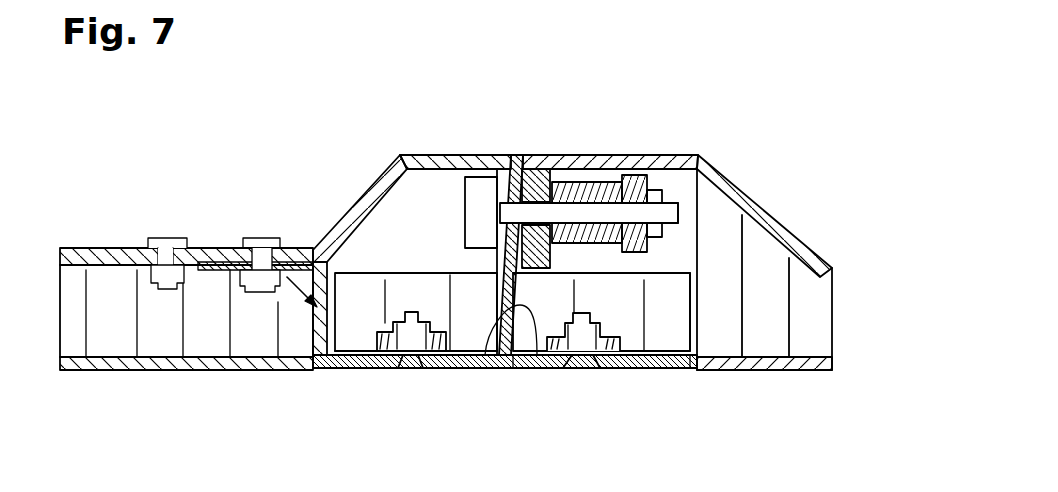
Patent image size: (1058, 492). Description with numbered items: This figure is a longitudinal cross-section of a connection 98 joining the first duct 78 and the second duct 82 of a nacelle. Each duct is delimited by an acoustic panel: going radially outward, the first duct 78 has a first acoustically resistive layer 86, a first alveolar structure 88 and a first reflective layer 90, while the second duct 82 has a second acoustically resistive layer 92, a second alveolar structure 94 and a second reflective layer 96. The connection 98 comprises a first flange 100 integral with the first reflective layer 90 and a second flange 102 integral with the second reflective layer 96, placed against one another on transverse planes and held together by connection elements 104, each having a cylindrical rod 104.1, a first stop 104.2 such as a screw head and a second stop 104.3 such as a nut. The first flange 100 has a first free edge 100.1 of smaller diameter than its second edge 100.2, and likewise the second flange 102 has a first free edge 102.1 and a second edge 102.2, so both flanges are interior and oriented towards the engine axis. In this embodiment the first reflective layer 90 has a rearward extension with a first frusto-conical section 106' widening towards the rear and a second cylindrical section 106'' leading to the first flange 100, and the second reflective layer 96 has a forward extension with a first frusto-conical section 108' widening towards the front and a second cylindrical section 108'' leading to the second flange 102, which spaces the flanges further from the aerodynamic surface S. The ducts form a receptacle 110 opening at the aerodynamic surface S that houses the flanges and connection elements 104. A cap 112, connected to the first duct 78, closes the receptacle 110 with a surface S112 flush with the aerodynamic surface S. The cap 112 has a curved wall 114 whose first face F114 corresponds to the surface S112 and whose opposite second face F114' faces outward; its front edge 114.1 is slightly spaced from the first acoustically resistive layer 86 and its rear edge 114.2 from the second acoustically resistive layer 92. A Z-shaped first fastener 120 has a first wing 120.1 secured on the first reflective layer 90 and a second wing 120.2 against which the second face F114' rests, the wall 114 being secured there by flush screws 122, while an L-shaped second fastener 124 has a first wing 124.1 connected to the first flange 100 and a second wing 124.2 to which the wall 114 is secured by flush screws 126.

The first duct 78 is at (312, 378).
The second duct 82 is at (697, 380).
The first acoustically resistive layer 86 is at (72, 372).
The first alveolar structure 88 is at (50, 265).
The first reflective layer 90 is at (93, 248).
The second acoustically resistive layer 92 is at (832, 365).
The second alveolar structure 94 is at (838, 277).
The second reflective layer 96 is at (832, 268).
The connection 98 is at (524, 132).
The first flange 100 is at (518, 157).
The first free edge 100.1 is at (500, 265).
The second edge 100.2 is at (497, 155).
The second flange 102 is at (535, 180).
The first free edge 102.1 is at (540, 255).
The second edge 102.2 is at (538, 183).
The connection element 104 is at (592, 181).
The cylindrical rod 104.1 is at (678, 220).
The second stop 104.3 is at (662, 193).
The first stop 104.2 is at (413, 205).
The first frusto-conical section 106' is at (345, 208).
The second cylindrical section 106'' is at (451, 173).
The first frusto-conical section 108' is at (789, 262).
The second cylindrical section 108'' is at (610, 119).
The receptacle 110 is at (402, 156).
The cap 112 is at (528, 395).
The curved wall 114 is at (473, 385).
The front edge 114.1 is at (323, 372).
The rear edge 114.2 is at (697, 367).
The first face F114 is at (410, 389).
The second face F114' is at (416, 297).
The first fastener 120 is at (298, 262).
The first wing 120.1 is at (220, 262).
The second wing 120.2 is at (445, 365).
The flush screws 122 is at (395, 365).
The second fastener 124 is at (542, 357).
The first wing 124.1 is at (490, 360).
The second wing 124.2 is at (620, 368).
The flush screws 126 is at (585, 322).
The aerodynamic surface S is at (267, 390).
The surface S112 is at (652, 388).